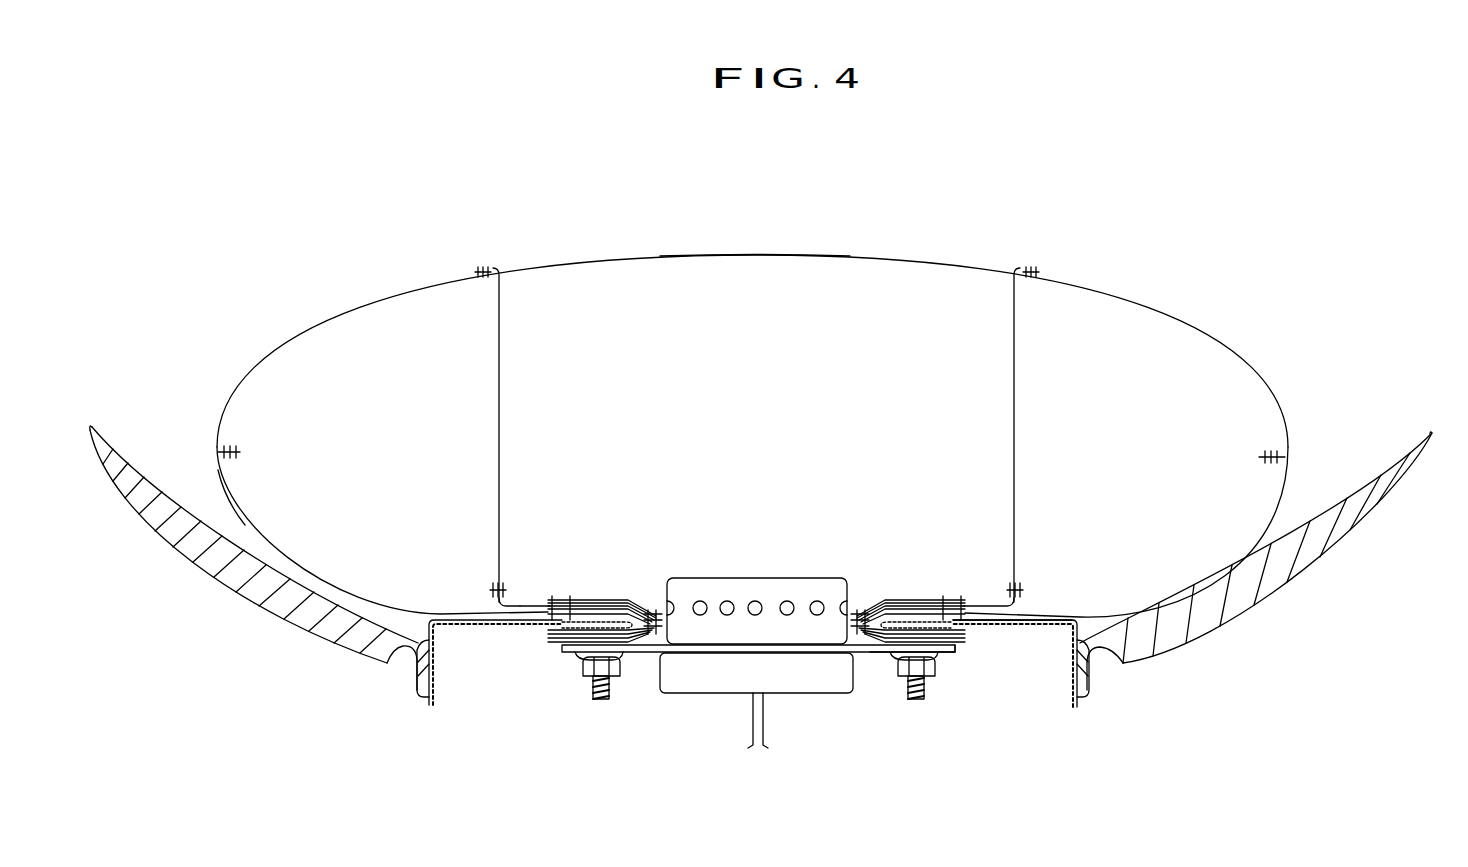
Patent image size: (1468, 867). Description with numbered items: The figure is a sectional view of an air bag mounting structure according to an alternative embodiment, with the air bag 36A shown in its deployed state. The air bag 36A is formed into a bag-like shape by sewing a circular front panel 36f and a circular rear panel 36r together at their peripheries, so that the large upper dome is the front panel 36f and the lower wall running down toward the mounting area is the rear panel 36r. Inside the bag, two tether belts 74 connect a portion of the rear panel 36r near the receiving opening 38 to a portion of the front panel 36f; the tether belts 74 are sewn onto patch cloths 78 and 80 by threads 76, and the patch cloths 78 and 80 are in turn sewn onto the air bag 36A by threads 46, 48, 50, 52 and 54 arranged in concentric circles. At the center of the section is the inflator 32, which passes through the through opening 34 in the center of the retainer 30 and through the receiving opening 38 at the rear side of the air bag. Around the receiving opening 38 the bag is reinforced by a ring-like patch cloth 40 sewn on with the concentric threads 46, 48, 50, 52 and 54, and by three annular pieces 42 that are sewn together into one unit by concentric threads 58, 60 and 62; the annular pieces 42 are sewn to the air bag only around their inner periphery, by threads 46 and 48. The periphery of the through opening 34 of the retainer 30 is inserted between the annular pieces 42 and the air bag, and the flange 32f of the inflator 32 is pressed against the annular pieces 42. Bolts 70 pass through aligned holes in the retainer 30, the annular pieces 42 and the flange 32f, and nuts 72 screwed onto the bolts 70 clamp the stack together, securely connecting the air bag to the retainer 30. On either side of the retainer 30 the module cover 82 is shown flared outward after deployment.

The retainer 30 is at (470, 627).
The inflator 32 is at (697, 693).
The flange of the inflator 32f is at (636, 653).
The through opening 34 is at (620, 600).
The air bag 36A is at (992, 264).
The front panel 36f is at (703, 256).
The rear panel 36r is at (236, 502).
The receiving opening 38 is at (645, 600).
The patch cloth 40 is at (565, 600).
The annular pieces 42 is at (543, 637).
The thread 46 is at (866, 598).
The thread 48 is at (887, 598).
The thread 50 is at (905, 600).
The thread 52 is at (948, 600).
The thread 54 is at (968, 602).
The thread 58 is at (885, 652).
The thread 60 is at (952, 652).
The thread 62 is at (965, 648).
The bolt 70 is at (600, 692).
The nut 72 is at (585, 672).
The tether belt 74 is at (500, 385).
The thread 76 is at (500, 590).
The patch cloth 78 is at (515, 604).
The patch cloth 80 is at (498, 604).
The module cover 82 is at (310, 636).